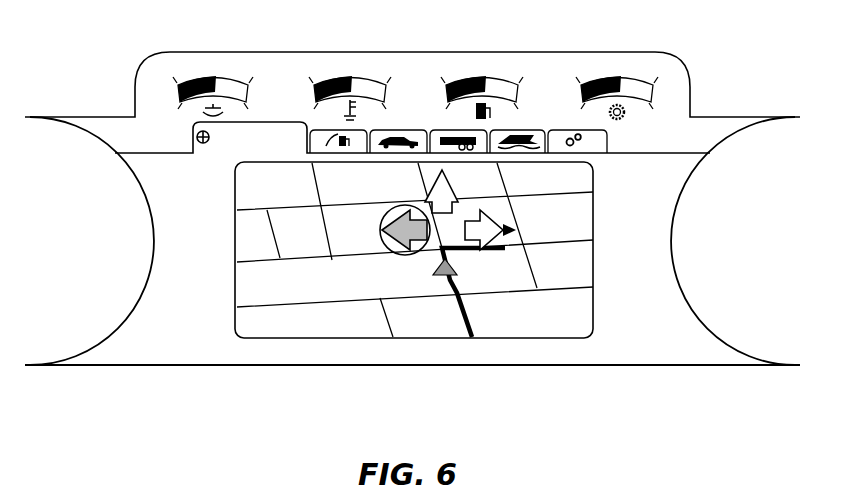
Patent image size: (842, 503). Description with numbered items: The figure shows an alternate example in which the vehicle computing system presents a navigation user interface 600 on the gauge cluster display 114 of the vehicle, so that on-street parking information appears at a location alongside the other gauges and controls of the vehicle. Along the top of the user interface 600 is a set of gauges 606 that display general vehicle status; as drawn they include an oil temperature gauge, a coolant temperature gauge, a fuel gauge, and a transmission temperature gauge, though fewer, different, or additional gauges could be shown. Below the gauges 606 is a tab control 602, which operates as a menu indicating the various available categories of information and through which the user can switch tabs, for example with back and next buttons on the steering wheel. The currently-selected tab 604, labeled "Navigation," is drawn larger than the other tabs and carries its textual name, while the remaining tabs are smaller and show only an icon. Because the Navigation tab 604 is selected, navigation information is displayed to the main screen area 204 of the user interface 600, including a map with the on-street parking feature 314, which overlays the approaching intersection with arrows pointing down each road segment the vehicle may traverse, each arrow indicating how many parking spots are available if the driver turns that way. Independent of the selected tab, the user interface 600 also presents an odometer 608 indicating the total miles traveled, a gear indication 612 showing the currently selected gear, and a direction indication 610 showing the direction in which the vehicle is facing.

The navigation user interface 600 is at (163, 33).
The gauge cluster display 114 is at (592, 51).
The currently-selected tab 604 is at (267, 120).
The gauges 606 is at (697, 58).
The tab control 602 is at (182, 125).
The main screen area 204 is at (222, 165).
The on-street parking feature 314 is at (430, 162).
The odometer 608 is at (142, 349).
The direction indication 610 is at (683, 350).
The gear indication 612 is at (362, 353).